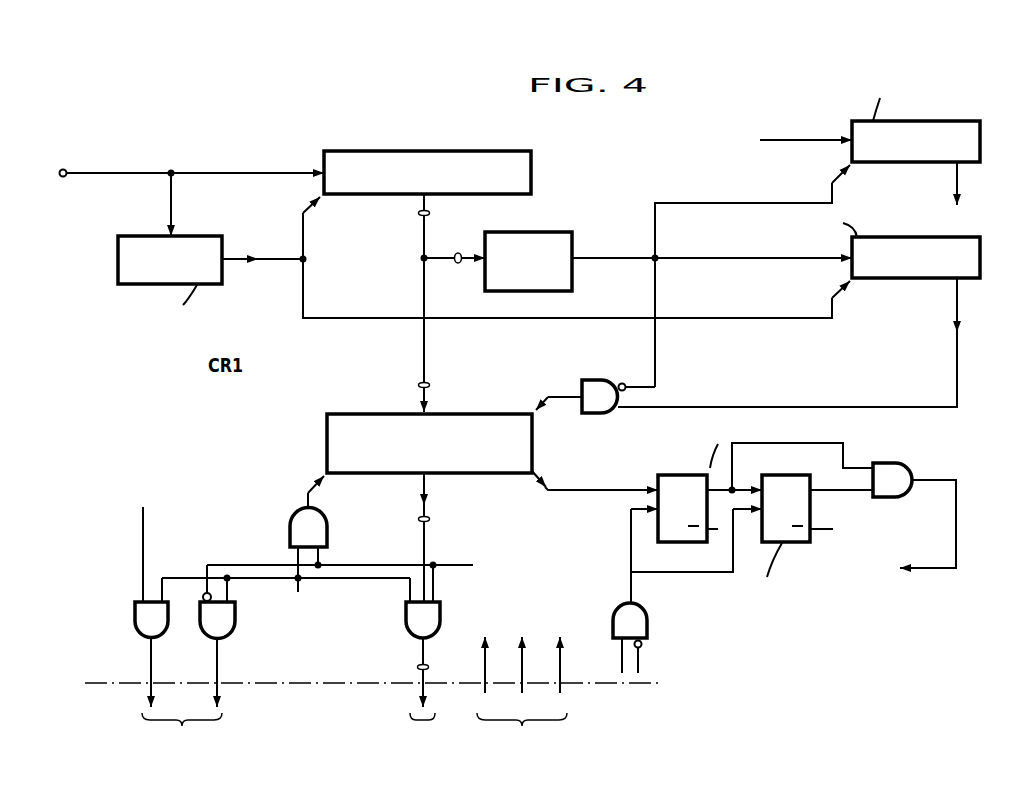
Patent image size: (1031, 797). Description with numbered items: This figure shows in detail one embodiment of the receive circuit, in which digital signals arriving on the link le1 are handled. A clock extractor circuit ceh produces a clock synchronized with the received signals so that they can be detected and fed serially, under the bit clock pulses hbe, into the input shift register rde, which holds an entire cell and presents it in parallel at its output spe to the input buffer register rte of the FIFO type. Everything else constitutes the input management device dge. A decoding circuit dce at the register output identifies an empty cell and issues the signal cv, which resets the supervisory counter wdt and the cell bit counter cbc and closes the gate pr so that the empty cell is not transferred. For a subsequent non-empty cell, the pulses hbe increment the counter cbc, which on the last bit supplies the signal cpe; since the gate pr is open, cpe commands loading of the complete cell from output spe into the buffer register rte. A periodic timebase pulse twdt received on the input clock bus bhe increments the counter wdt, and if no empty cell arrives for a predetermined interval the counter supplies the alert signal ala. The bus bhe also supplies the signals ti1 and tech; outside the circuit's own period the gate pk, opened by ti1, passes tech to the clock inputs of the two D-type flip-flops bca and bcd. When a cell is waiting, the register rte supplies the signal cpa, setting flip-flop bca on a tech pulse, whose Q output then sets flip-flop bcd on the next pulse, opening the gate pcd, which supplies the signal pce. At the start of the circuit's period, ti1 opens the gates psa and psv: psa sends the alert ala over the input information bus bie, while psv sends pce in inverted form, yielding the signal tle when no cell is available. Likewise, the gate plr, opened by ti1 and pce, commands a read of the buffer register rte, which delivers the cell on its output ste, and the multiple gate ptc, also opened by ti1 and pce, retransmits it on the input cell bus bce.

The link le1 is at (67, 170).
The clock extractor circuit ceh is at (183, 248).
The bit clock pulses hbe is at (301, 282).
The input shift register rde is at (415, 157).
The output of the input shift register spe is at (423, 243).
The decoding circuit dce is at (528, 245).
The empty cell signal cv is at (603, 257).
The timebase pulse twdt is at (806, 124).
The supervisory counter wdt is at (893, 130).
The alert signal ala is at (958, 180).
The cell bit counter cbc is at (920, 248).
The last bit signal cpe is at (957, 373).
The input management device dge is at (783, 365).
The gate pr is at (602, 390).
The input buffer register rte is at (388, 427).
The output of the input buffer register ste is at (425, 530).
The cell waiting signal cpa is at (568, 500).
The D-type flip-flop bca is at (700, 474).
The D-type flip-flop bcd is at (805, 474).
The gate pcd is at (895, 472).
The available cell signal pce is at (956, 538).
The gate plr is at (300, 522).
The period signal ti1 is at (298, 592).
The gate psa is at (145, 626).
The no cell available signal tle is at (212, 658).
The gate psv is at (223, 628).
The multiple gate ptc is at (417, 625).
The gate pk is at (620, 618).
The clock signal tech is at (622, 655).
The input information bus bie is at (182, 732).
The input cell bus bce is at (424, 732).
The input clock bus bhe is at (522, 732).